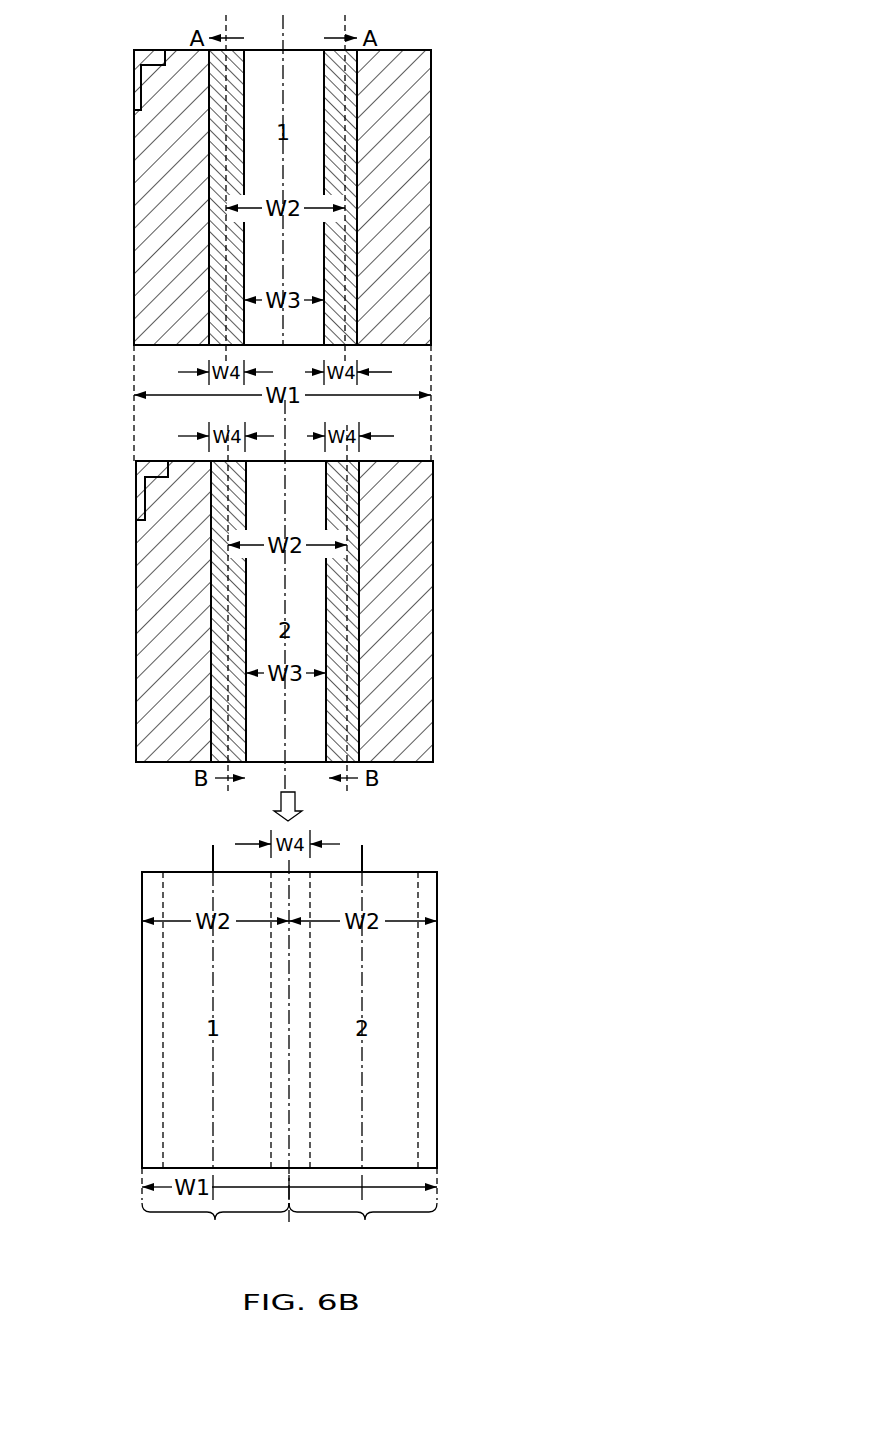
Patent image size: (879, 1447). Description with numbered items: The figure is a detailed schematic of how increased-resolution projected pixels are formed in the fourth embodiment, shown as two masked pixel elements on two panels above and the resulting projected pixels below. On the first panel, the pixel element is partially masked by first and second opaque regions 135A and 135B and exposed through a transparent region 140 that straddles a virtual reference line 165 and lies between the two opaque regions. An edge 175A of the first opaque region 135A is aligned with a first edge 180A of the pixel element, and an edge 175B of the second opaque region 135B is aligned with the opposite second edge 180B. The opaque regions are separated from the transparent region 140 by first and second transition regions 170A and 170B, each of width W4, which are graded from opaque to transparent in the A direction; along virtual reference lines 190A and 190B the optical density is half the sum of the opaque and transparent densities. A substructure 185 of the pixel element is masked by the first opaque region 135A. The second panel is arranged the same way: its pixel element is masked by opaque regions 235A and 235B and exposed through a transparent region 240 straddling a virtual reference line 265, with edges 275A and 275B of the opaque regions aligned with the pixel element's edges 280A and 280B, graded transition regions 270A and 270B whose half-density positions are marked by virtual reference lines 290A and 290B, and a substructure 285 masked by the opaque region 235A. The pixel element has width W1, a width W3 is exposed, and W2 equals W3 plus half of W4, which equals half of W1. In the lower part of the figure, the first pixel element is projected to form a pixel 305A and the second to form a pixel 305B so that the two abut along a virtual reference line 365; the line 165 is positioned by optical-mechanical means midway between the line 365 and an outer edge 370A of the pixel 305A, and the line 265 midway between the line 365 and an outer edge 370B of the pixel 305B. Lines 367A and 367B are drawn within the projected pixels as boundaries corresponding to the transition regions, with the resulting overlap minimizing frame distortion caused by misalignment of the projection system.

The first opaque region 135A is at (156, 232).
The second opaque region 135B is at (420, 192).
The transparent region 140 is at (318, 88).
The virtual reference line 165 is at (283, 36).
The first transition region 170A is at (217, 157).
The second transition region 170B is at (335, 108).
The edge of first opaque region 175A is at (134, 285).
The edge of second opaque region 175B is at (431, 263).
The first edge of pixel element 180A is at (134, 330).
The second edge of pixel element 180B is at (431, 312).
The substructure of pixel element 185 is at (148, 53).
The virtual reference line 190A is at (226, 19).
The virtual reference line 190B is at (346, 19).
The first opaque region 235A is at (160, 507).
The second opaque region 235B is at (422, 483).
The transparent region 240 is at (321, 742).
The virtual reference line 265 is at (285, 418).
The first transition region 270A is at (212, 560).
The second transition region 270B is at (337, 567).
The edge of first opaque region 275A is at (230, 602).
The edge of second opaque region 275B is at (433, 627).
The first edge of pixel element 280A is at (230, 642).
The second edge of pixel element 280B is at (433, 683).
The substructure of pixel element 285 is at (148, 470).
The virtual reference line 290A is at (230, 745).
The virtual reference line 290B is at (352, 733).
The pixel 305A is at (215, 1226).
The pixel 305B is at (363, 1224).
The virtual reference line 365 is at (290, 1222).
The spacer boundary 367A is at (150, 978).
The spacer boundary 367B is at (425, 970).
The outer edge of pixel 370A is at (142, 1130).
The outer edge of pixel 370B is at (437, 1058).